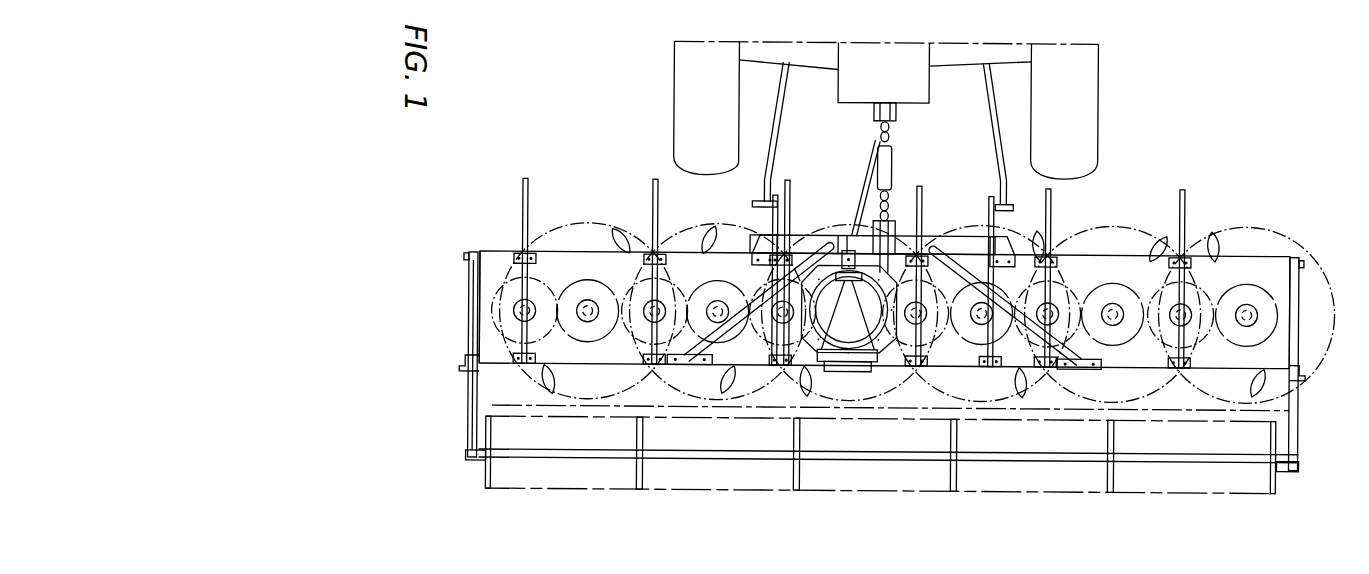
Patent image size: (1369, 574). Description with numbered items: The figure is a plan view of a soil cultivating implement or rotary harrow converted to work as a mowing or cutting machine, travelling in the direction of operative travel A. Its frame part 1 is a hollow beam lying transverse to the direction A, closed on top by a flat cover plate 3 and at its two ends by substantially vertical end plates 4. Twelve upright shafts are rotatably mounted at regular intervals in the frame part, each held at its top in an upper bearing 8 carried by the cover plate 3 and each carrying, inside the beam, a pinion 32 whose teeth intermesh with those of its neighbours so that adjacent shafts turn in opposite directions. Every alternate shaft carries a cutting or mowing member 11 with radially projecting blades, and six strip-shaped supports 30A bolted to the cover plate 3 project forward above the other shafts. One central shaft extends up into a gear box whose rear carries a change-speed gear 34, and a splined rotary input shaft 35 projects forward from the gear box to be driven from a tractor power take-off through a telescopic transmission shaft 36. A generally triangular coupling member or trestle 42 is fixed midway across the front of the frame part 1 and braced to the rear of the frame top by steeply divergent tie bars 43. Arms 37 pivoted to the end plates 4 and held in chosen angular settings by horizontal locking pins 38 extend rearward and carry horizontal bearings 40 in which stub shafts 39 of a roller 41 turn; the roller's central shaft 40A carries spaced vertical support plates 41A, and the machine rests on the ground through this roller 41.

The frame part 1 is at (952, 372).
The cover plate 3 is at (571, 256).
The end plates 4 is at (484, 262).
The upper bearing 8 is at (536, 305).
The cutting or mowing member 11 is at (698, 231).
The strip-shaped supports 30A is at (523, 214).
The pinion 32 is at (863, 327).
The change-speed gear 34 is at (832, 369).
The rotary input shaft 35 is at (841, 262).
The telescopic transmission shaft 36 is at (868, 178).
The arms 37 is at (467, 316).
The horizontal locking pins 38 is at (462, 366).
The stub shafts 39 is at (486, 472).
The horizontal bearings 40 is at (466, 456).
The central shaft 40A is at (992, 457).
The roller 41 is at (1141, 521).
The vertical support plates 41A is at (796, 480).
The coupling member or trestle 42 is at (948, 237).
The tie bars 43 is at (716, 360).
The direction of operative travel A is at (638, 79).